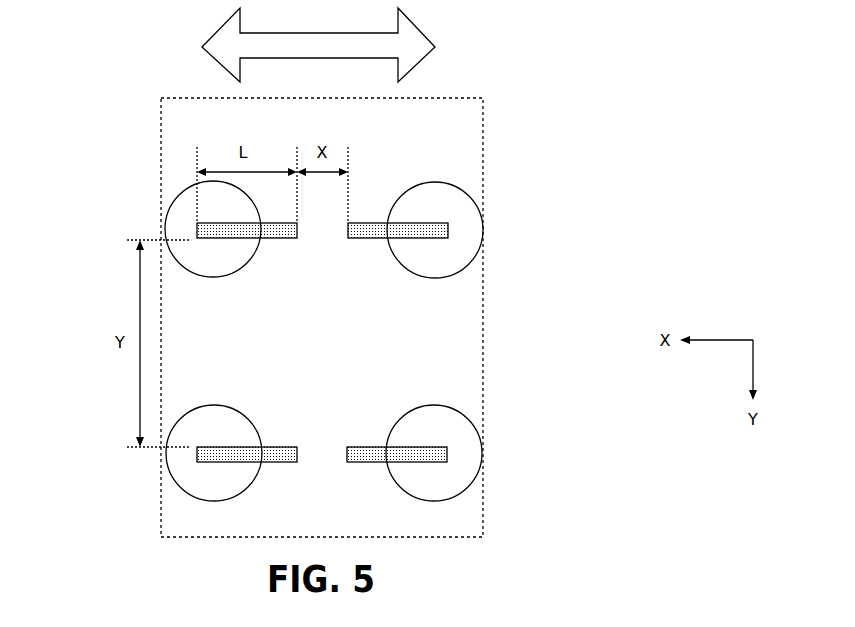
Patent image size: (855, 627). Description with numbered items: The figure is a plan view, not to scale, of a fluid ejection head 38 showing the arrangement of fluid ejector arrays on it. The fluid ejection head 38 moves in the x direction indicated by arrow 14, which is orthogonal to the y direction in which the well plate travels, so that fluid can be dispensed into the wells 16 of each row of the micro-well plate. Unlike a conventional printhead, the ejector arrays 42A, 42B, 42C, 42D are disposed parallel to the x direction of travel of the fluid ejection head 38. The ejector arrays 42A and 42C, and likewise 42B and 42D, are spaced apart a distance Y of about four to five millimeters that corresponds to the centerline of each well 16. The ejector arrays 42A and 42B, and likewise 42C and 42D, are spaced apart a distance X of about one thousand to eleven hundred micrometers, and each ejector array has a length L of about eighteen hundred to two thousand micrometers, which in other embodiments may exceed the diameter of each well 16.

The arrow 14 is at (305, 50).
The fluid ejection head 38 is at (494, 70).
The well 16 is at (178, 191).
The ejector array 42A is at (193, 232).
The ejector array 42B is at (437, 230).
The ejector array 42C is at (193, 452).
The ejector array 42D is at (448, 456).